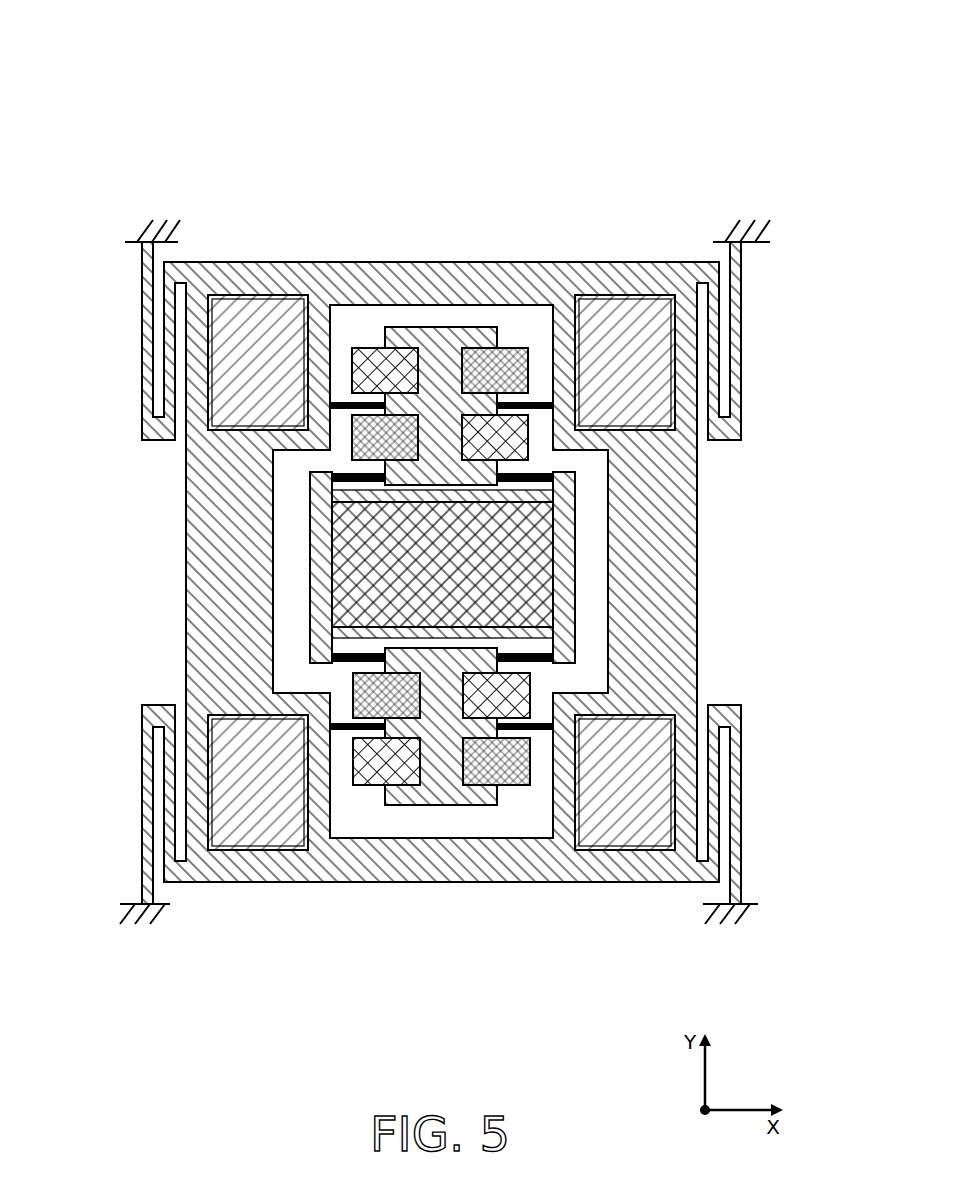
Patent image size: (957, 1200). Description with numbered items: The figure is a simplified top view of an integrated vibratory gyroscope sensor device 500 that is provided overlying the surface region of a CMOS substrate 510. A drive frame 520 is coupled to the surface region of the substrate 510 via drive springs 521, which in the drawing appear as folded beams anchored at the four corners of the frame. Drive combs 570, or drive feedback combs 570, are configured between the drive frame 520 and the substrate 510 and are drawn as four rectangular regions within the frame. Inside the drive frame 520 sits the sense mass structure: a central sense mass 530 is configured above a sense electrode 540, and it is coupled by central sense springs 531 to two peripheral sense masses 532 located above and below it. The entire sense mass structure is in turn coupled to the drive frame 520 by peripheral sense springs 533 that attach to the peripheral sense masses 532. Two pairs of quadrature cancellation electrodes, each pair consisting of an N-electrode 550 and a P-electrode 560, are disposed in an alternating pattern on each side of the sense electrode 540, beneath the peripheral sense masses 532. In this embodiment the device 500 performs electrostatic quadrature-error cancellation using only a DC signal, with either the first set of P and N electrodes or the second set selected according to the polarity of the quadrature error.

The integrated vibratory gyroscope sensor device 500 is at (441, 36).
The CMOS substrate 510 is at (426, 173).
The drive frame 520 is at (500, 261).
The drive spring 521 is at (141, 395).
The sense mass 530 is at (577, 533).
The sense spring 531 is at (353, 475).
The peripheral sense mass 532 is at (409, 327).
The peripheral sense spring 533 is at (330, 405).
The sense electrode 540 is at (553, 562).
The N-electrode 550 is at (399, 349).
The P-electrode 560 is at (400, 414).
The drive comb 570 is at (238, 296).